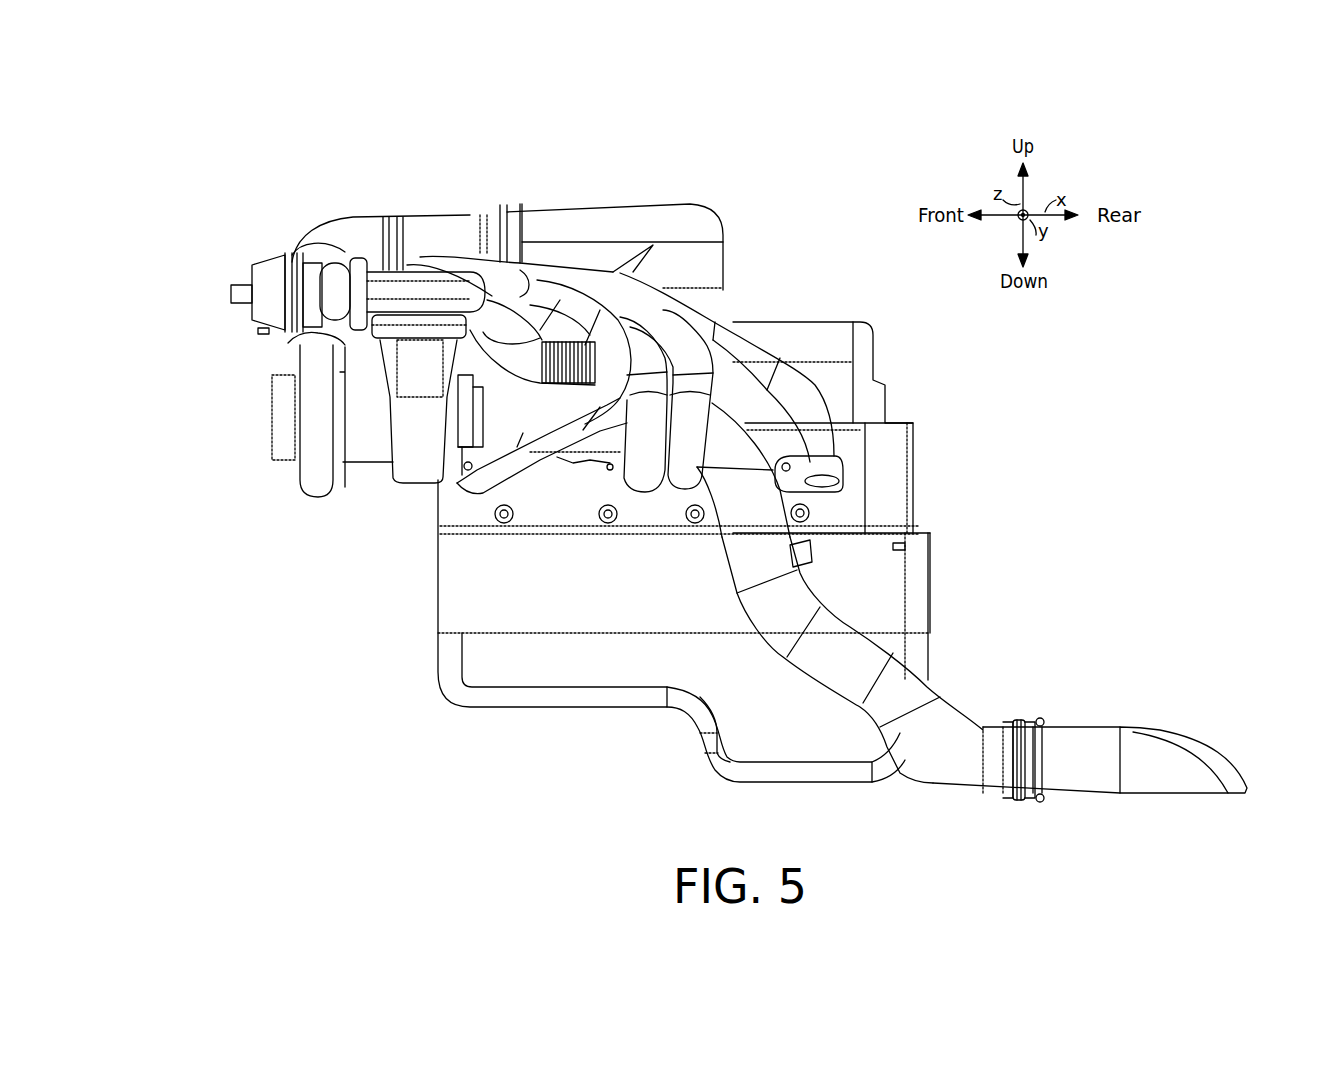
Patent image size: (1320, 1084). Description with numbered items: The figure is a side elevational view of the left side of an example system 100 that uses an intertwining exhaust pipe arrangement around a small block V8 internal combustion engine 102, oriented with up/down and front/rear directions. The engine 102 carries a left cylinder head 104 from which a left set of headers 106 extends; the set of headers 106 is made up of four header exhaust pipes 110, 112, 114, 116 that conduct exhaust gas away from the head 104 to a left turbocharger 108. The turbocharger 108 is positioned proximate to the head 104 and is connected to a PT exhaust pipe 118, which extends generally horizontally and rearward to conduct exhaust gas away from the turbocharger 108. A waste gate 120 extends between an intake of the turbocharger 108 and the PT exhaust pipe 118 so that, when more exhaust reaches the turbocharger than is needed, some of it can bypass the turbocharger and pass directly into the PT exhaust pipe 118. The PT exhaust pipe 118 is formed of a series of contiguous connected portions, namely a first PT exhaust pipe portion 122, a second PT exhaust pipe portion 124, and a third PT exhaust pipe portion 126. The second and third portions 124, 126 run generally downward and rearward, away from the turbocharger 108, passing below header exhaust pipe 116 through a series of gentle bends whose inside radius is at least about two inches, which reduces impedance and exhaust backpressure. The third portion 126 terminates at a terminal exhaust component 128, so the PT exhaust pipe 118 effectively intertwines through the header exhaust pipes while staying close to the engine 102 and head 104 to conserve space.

The system 100 is at (250, 114).
The internal combustion engine 102 is at (438, 548).
The cylinder head 104 is at (857, 440).
The set of headers 106 is at (722, 334).
The turbocharger 108 is at (310, 493).
The header exhaust pipe 110 is at (475, 450).
The header exhaust pipe 112 is at (627, 473).
The header exhaust pipe 114 is at (670, 477).
The header exhaust pipe 116 is at (735, 348).
The PT exhaust pipe 118 is at (943, 782).
The waste gate 120 is at (525, 357).
The first PT exhaust pipe portion 122 is at (603, 433).
The second PT exhaust pipe portion 124 is at (783, 530).
The third PT exhaust pipe portion 126 is at (880, 650).
The terminal exhaust component 128 is at (1093, 732).